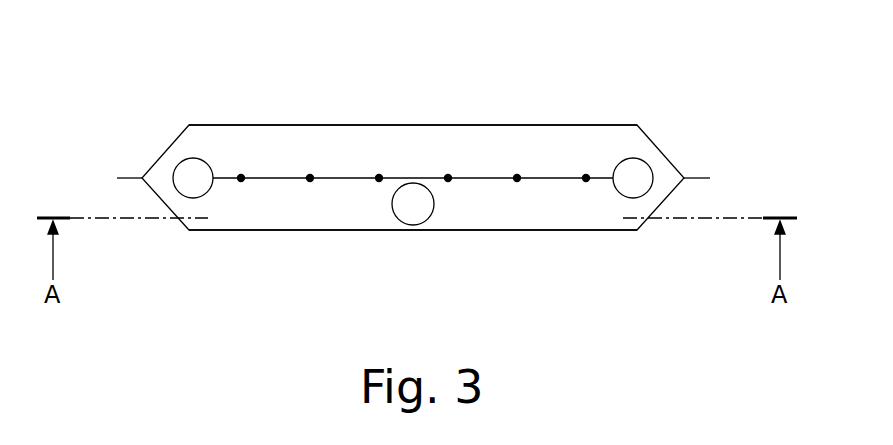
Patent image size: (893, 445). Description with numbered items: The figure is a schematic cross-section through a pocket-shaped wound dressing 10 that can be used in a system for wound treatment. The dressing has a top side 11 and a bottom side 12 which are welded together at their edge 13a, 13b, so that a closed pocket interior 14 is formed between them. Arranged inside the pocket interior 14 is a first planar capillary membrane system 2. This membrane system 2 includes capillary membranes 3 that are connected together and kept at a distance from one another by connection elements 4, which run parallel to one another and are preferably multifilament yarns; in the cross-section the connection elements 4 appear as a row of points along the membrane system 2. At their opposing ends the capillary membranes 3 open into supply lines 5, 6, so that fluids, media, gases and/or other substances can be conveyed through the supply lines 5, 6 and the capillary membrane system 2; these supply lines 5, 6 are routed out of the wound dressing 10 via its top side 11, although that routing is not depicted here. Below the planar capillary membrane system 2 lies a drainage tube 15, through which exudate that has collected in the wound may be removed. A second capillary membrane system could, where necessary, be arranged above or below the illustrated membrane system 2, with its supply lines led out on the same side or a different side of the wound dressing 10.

The pocket-shaped wound dressing 10 is at (641, 119).
The top side 11 is at (245, 125).
The bottom side 12 is at (365, 230).
The edge 13a is at (127, 172).
The edge 13b is at (700, 174).
The closed pocket interior 14 is at (549, 138).
The first planar capillary membrane system 2 is at (477, 178).
The capillary membranes 3 is at (342, 178).
The connection elements 4 is at (586, 180).
The supply line 5 is at (192, 178).
The supply line 6 is at (633, 178).
The drainage tube 15 is at (412, 203).